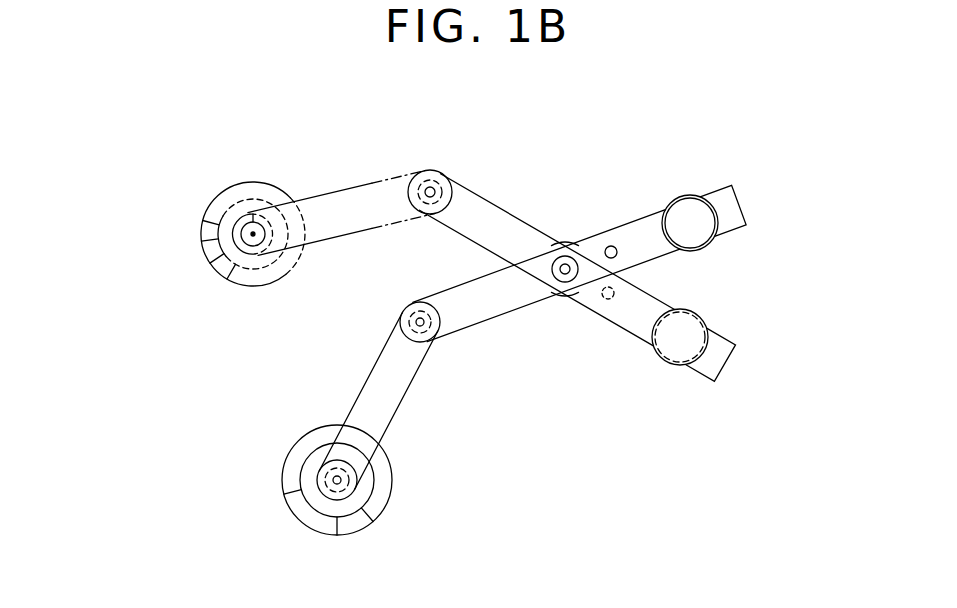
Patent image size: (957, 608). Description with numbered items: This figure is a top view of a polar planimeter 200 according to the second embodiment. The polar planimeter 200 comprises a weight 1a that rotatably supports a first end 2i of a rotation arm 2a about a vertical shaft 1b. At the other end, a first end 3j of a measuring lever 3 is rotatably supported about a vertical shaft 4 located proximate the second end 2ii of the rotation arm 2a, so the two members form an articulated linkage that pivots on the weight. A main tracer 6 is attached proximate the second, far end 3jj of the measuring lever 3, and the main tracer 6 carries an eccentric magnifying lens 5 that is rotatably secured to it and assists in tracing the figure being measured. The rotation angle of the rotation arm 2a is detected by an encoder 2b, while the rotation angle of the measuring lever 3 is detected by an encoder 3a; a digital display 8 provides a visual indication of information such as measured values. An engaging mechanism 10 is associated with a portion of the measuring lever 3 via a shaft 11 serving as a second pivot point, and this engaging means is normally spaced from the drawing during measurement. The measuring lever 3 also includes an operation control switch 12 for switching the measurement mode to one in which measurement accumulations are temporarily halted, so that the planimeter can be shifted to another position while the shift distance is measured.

The weight 1a is at (232, 280).
The vertical shaft 1b is at (250, 213).
The rotation arm 2a is at (330, 192).
The encoder 2b is at (350, 470).
The first end of the rotation arm 2i is at (203, 238).
The second end of the rotation arm 2ii is at (415, 172).
The measuring lever 3 is at (485, 212).
The encoder 3a is at (425, 357).
The first end of the measuring lever 3j is at (465, 178).
The second end of the measuring lever 3jj is at (735, 205).
The vertical shaft 4 is at (410, 178).
The eccentric magnifying lens 5 is at (687, 212).
The main tracer 6 is at (706, 254).
The digital display 8 is at (205, 220).
The engaging mechanism 10 is at (580, 297).
The shaft 11 is at (565, 256).
The operation control switch 12 is at (611, 246).
The polar planimeter 200 is at (718, 120).